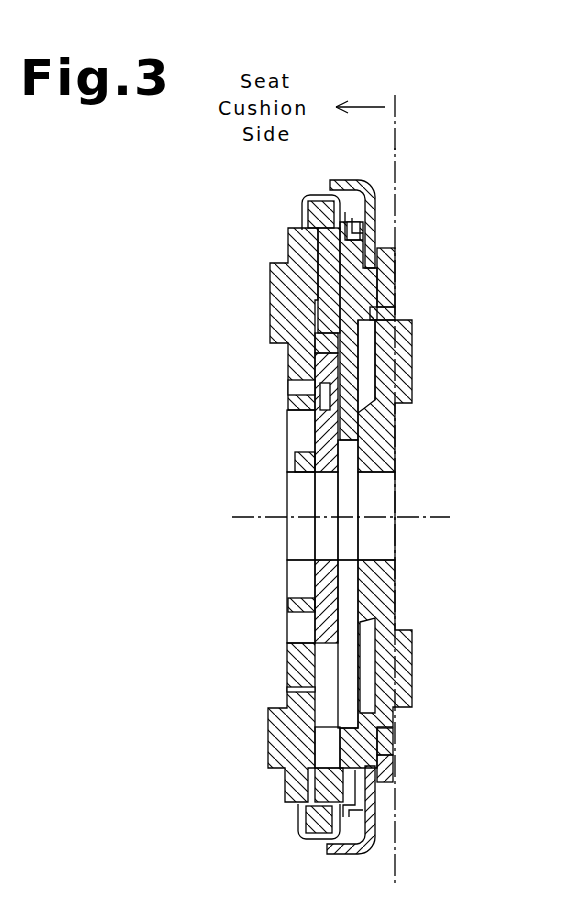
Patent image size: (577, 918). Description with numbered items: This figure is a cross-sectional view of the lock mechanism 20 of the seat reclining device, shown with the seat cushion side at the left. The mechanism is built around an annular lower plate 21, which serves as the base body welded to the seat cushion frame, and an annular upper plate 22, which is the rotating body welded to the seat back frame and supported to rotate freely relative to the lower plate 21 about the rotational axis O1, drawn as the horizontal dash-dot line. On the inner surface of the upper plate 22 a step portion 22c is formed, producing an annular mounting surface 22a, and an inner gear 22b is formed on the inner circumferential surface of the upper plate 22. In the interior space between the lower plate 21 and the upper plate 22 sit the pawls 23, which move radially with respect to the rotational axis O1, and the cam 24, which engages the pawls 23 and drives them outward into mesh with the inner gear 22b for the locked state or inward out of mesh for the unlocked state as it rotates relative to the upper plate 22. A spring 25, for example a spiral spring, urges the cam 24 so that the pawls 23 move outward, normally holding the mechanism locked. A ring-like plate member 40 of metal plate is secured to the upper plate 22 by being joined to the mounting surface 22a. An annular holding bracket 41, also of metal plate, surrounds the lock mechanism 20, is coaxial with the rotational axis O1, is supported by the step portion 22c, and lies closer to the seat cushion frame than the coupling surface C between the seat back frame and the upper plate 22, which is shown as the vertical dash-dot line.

The lock mechanism 20 is at (264, 515).
The lower plate 21 is at (302, 360).
The upper plate 22 is at (403, 544).
The mounting surface 22a is at (380, 768).
The inner gear 22b is at (382, 283).
The step portion 22c is at (380, 744).
The pawls 23 is at (383, 312).
The cam 24 is at (330, 596).
The spring 25 is at (296, 630).
The plate member 40 is at (392, 223).
The holding bracket 41 is at (338, 178).
The coupling surface C is at (397, 147).
The rotational axis O1 is at (425, 517).